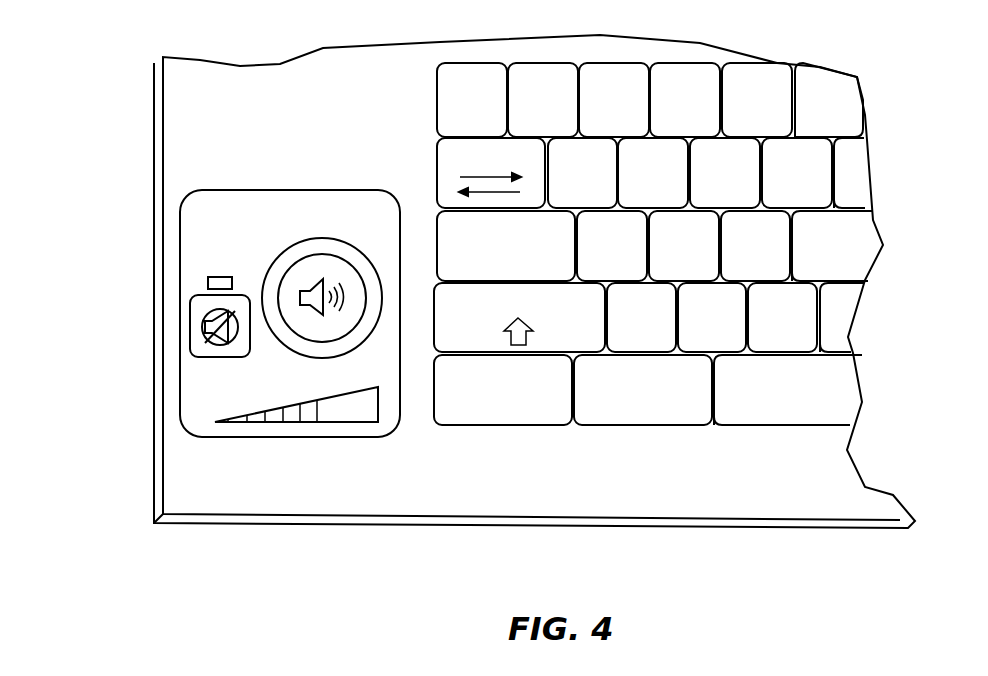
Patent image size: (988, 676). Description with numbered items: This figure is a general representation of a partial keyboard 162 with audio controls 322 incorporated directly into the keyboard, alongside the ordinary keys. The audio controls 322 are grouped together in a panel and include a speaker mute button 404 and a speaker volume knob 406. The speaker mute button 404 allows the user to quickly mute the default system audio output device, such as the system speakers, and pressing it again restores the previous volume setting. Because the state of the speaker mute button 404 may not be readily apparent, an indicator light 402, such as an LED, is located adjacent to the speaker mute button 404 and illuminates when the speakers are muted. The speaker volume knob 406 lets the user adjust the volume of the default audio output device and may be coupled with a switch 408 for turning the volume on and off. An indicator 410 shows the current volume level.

The keyboard housing 162 is at (333, 524).
The audio controls 322 is at (230, 436).
The indicator light 402 is at (212, 273).
The speaker mute button 404 is at (190, 328).
The speaker volume knob 406 is at (348, 253).
The switch 408 is at (357, 267).
The indicator 410 is at (337, 422).